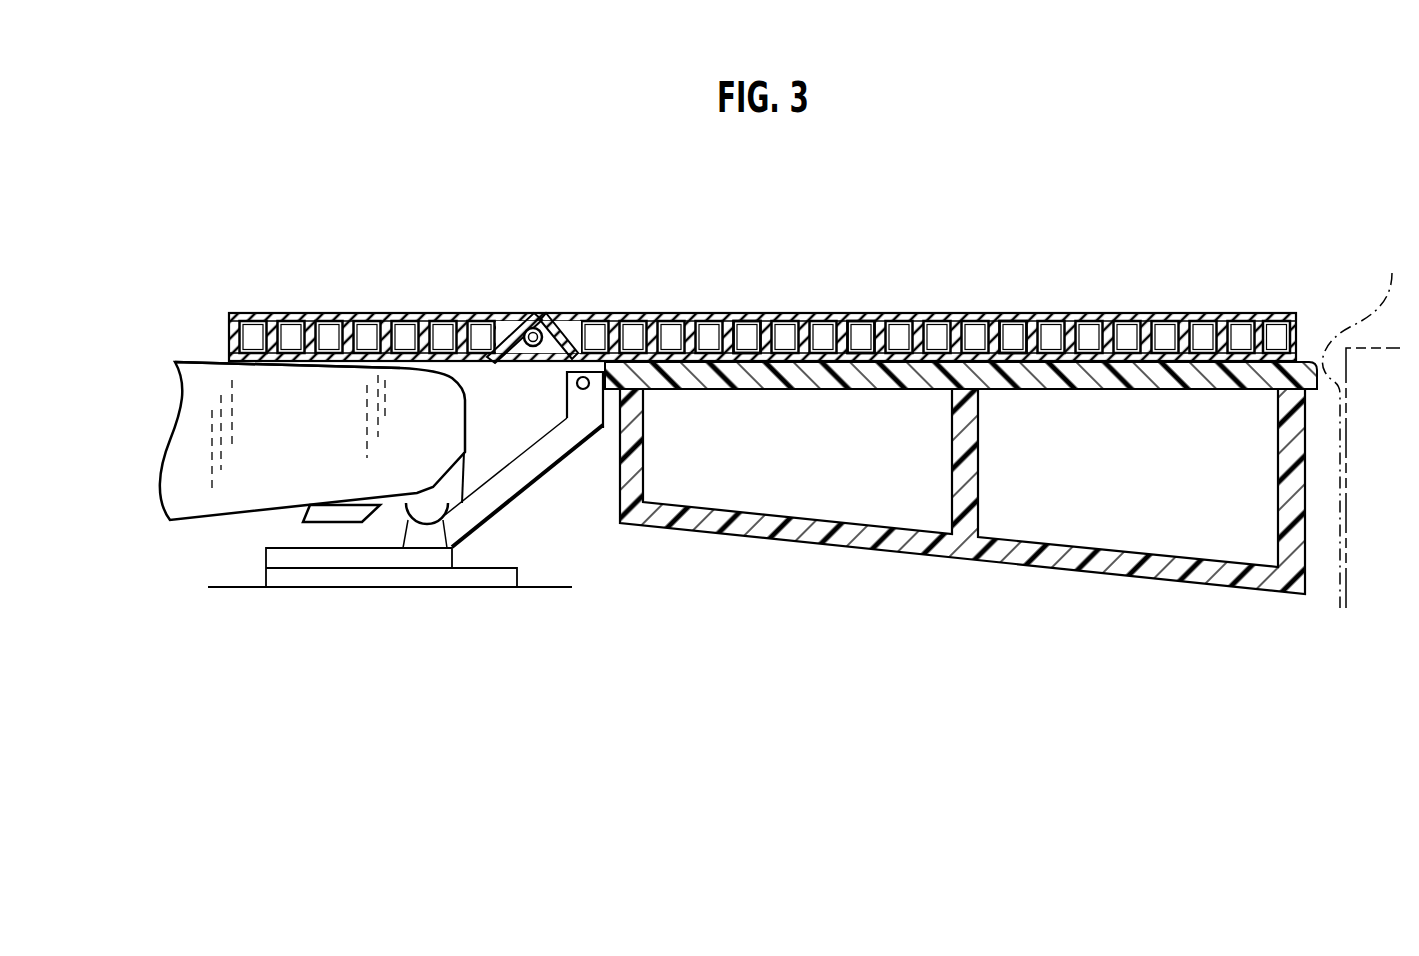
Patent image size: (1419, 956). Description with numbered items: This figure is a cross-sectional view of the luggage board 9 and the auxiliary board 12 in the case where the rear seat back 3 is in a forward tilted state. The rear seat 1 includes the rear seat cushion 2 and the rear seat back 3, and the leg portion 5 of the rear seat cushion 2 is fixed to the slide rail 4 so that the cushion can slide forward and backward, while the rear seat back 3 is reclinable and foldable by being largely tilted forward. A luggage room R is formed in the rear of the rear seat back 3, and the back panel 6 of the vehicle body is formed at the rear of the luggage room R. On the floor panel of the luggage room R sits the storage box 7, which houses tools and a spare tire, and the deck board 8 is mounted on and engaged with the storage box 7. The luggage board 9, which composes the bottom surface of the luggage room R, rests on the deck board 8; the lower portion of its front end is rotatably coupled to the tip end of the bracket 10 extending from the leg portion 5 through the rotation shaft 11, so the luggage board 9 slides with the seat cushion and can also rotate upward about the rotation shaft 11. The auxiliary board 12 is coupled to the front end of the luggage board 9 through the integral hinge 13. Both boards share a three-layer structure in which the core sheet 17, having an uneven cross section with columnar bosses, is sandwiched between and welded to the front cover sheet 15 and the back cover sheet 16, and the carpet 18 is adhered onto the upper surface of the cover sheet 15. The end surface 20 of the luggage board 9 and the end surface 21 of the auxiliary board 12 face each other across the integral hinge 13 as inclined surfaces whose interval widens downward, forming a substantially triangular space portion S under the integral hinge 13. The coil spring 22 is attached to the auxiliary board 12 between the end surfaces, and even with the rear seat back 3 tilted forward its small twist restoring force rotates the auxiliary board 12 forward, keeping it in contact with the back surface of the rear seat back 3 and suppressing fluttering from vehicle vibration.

The rear seat 1 is at (166, 427).
The rear seat cushion 2 is at (337, 513).
The rear seat back 3 is at (205, 357).
The slide rail 4 is at (273, 560).
The leg portion 5 is at (417, 537).
The back panel 6 is at (1361, 425).
The storage box 7 is at (980, 568).
The deck board 8 is at (1106, 392).
The luggage board 9 is at (1129, 303).
The bracket 10 is at (510, 465).
The rotation shaft 11 is at (588, 392).
The auxiliary board 12 is at (359, 304).
The integral hinge 13 is at (532, 315).
The cover sheet 15 is at (1018, 330).
The cover sheet 16 is at (742, 350).
The core sheet 17 is at (870, 340).
The carpet 18 is at (650, 316).
The end surface 20 is at (555, 318).
The end surface 21 is at (468, 313).
The coil spring 22 is at (522, 347).
The space portion S is at (546, 360).
The luggage room R is at (955, 190).